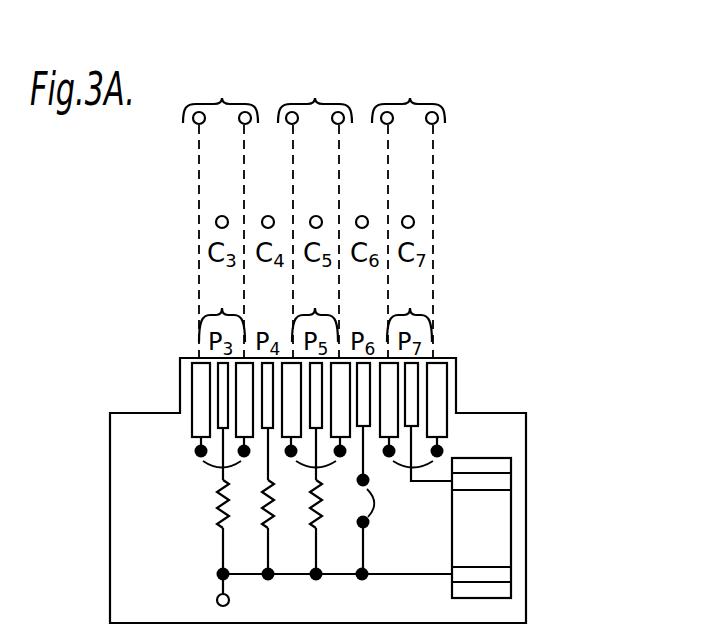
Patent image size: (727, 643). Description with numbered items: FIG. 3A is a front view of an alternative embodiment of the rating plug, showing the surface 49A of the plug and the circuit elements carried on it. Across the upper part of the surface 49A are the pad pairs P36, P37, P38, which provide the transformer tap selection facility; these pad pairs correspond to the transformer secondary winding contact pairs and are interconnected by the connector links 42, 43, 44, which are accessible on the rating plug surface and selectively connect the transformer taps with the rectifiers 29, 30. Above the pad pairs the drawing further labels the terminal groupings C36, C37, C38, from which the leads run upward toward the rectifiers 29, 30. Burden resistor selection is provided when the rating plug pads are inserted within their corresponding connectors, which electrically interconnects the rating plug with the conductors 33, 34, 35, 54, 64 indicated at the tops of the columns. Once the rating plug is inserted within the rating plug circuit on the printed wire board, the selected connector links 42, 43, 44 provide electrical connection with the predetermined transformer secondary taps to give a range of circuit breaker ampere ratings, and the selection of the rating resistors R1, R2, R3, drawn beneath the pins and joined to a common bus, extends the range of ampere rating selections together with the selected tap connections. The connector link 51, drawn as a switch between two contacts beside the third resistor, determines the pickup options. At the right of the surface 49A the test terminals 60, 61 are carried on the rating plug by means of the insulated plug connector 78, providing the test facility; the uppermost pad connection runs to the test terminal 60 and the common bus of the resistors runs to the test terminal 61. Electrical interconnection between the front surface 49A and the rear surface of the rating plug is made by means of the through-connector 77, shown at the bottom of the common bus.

The rectifier 29 is at (222, 72).
The rectifier 30 is at (412, 72).
The conductor 33 is at (222, 216).
The conductor 34 is at (268, 216).
The conductor 35 is at (316, 216).
The conductor 54 is at (362, 216).
The conductor 64 is at (408, 216).
The connector link 42 is at (203, 463).
The connector link 43 is at (308, 471).
The connector link 44 is at (404, 464).
The connector link 51 is at (375, 512).
The test terminal 60 is at (507, 483).
The test terminal 61 is at (509, 575).
The through-connector 77 is at (216, 600).
The insulated plug connector 78 is at (497, 531).
The rating plug surface 49A is at (668, 547).
The cable C36 is at (220, 97).
The cable C37 is at (315, 97).
The cable C38 is at (408, 97).
The pad pair P36 is at (222, 309).
The pad pair P37 is at (315, 309).
The pad pair P38 is at (409, 309).
The rating resistor R1 is at (207, 501).
The rating resistor R2 is at (253, 501).
The rating resistor R3 is at (301, 501).